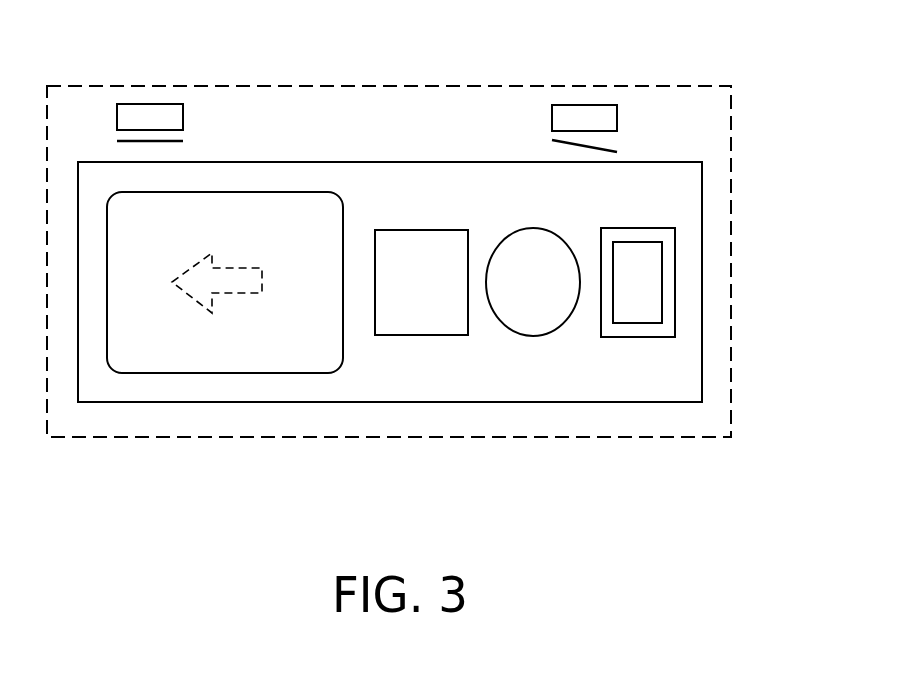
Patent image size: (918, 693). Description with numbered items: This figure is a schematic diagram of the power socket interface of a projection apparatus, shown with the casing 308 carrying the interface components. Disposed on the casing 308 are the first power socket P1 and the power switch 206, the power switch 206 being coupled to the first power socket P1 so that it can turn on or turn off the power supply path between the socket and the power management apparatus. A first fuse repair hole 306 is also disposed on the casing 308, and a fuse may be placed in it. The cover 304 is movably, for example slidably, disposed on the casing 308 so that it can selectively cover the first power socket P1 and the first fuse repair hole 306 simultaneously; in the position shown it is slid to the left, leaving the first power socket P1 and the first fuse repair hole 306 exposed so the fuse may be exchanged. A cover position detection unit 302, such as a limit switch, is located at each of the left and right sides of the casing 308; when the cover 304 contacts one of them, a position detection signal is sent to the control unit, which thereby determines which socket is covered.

The cover position detection unit 302 is at (152, 104).
The cover 304 is at (235, 192).
The fuse repair hole 306 is at (532, 337).
The casing 308 is at (690, 86).
The power switch 206 is at (675, 265).
The first power socket P1 is at (433, 230).